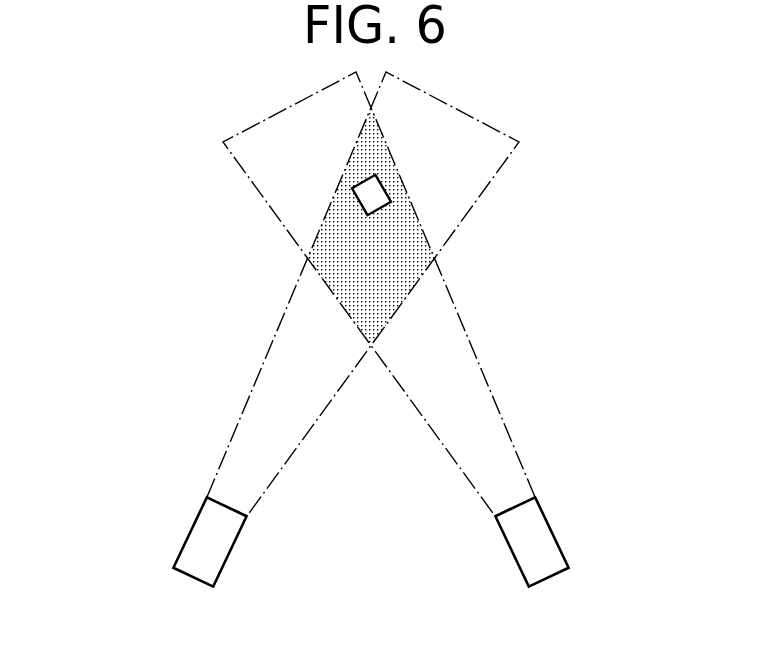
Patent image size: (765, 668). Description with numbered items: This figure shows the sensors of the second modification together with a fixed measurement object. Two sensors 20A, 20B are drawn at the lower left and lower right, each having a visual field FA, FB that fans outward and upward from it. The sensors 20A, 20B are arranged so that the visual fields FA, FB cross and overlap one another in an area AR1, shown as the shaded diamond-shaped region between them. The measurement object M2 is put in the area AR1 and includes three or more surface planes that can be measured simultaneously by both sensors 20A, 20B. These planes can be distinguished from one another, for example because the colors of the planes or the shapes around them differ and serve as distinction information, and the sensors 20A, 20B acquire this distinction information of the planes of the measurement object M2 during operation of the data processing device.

The sensor 20A is at (192, 536).
The sensor 20B is at (552, 533).
The visual field FA is at (233, 440).
The visual field FB is at (510, 439).
The area AR1 is at (375, 263).
The measurement object M2 is at (377, 193).